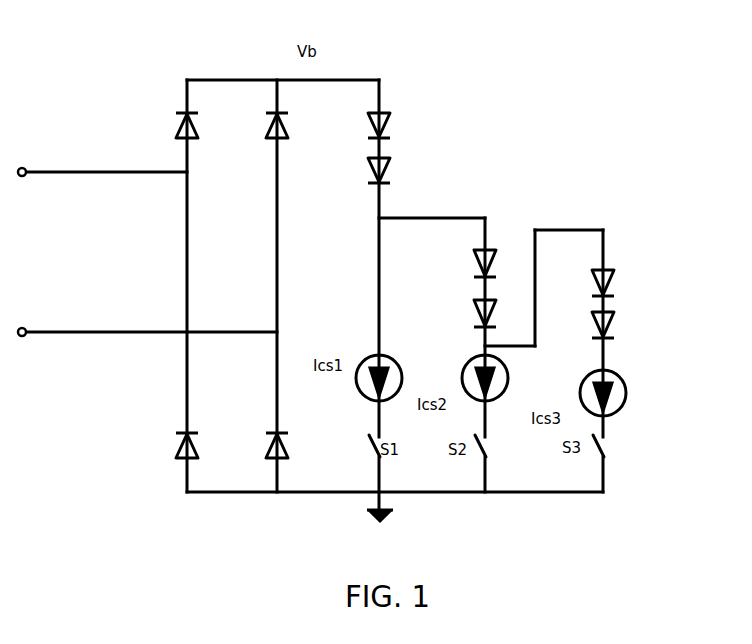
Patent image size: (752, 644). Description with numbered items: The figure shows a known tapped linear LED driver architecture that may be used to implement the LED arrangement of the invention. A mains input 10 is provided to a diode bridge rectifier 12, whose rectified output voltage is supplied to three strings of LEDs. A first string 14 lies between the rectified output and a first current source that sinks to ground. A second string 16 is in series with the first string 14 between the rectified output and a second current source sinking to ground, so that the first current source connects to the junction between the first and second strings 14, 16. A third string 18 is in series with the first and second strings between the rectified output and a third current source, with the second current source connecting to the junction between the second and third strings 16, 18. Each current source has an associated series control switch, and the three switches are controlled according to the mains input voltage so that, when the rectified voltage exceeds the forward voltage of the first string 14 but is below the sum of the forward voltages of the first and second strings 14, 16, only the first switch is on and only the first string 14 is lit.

The mains input 10 is at (49, 176).
The diode bridge rectifier 12 is at (200, 74).
The first string 14 is at (416, 148).
The second string 16 is at (495, 241).
The third string 18 is at (620, 299).